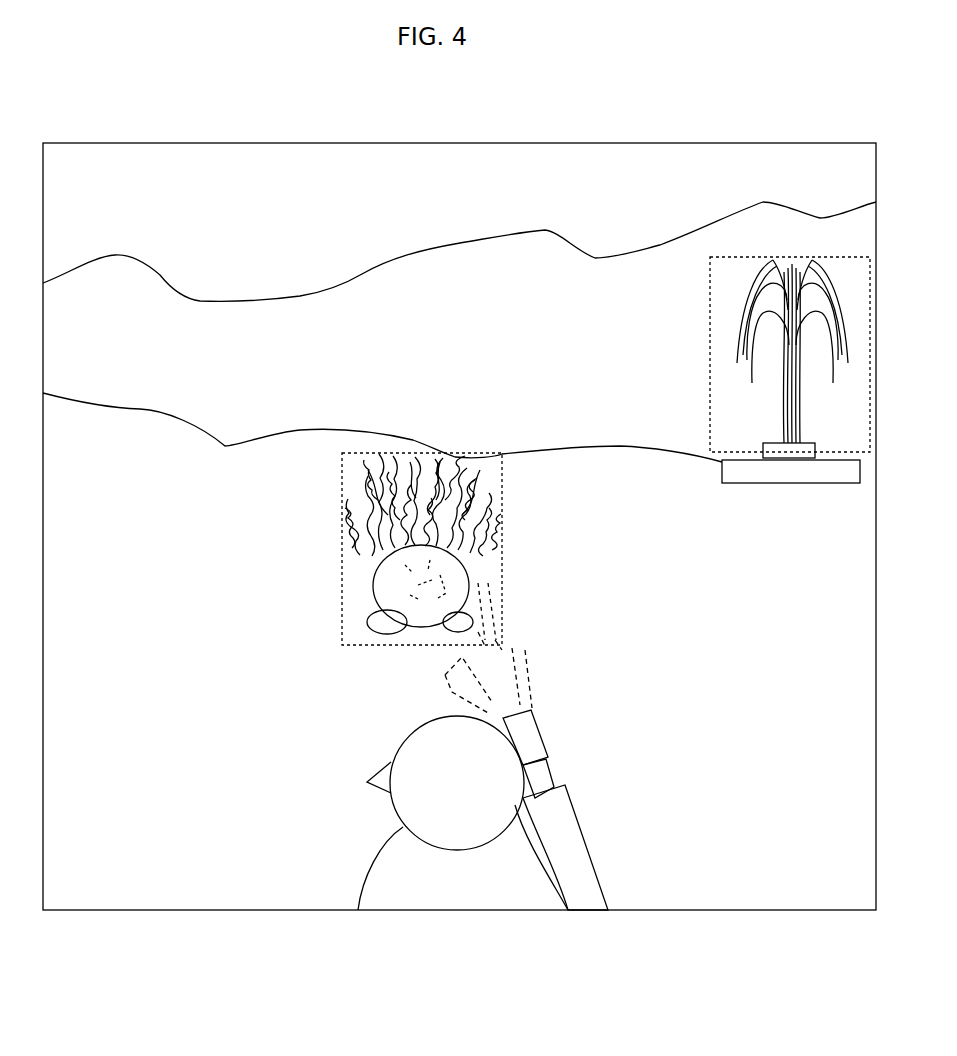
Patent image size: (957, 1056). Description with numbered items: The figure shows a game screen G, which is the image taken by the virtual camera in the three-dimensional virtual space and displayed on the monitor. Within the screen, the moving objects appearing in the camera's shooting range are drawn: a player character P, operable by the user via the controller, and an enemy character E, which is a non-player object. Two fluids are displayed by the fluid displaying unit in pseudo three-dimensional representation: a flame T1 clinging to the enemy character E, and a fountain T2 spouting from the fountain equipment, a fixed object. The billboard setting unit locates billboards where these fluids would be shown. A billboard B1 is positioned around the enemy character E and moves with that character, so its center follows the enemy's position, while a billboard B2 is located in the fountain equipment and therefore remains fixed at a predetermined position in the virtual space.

The game screen G is at (460, 143).
The billboard B2 is at (710, 333).
The fountain T2 is at (783, 417).
The billboard B1 is at (502, 578).
The flame T1 is at (363, 479).
The enemy character E is at (388, 573).
The player character P is at (417, 800).